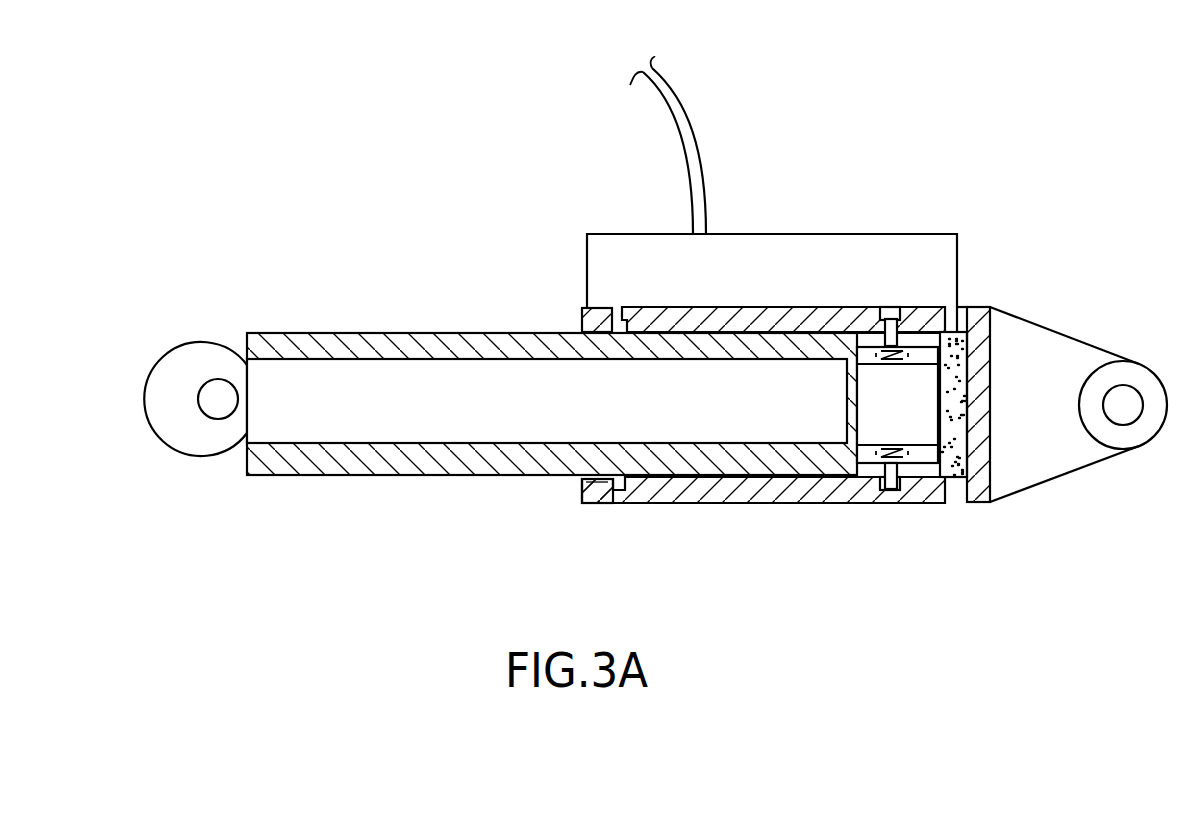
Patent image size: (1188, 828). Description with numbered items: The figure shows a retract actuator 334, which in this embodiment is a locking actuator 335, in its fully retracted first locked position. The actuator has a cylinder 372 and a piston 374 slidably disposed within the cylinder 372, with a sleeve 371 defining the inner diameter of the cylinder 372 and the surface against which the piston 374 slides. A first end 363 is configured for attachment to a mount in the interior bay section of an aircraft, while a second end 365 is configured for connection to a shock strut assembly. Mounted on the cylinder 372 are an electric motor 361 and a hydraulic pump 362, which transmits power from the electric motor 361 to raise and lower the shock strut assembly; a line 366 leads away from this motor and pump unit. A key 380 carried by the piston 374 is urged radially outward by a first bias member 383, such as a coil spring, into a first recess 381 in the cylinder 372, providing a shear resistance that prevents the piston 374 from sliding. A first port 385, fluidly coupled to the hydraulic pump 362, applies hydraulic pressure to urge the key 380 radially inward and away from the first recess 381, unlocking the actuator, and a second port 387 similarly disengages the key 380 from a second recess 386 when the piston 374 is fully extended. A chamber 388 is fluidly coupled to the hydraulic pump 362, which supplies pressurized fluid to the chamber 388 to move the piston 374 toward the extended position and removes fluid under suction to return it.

The retract actuator 334 is at (371, 121).
The locking actuator 335 is at (318, 247).
The electric motor 361 is at (612, 247).
The hydraulic pump 362 is at (948, 248).
The first end 363 is at (1067, 350).
The second end 365 is at (178, 378).
The cable conduit 366 is at (685, 118).
The sleeve 371 is at (772, 481).
The cylinder 372 is at (685, 490).
The piston 374 is at (383, 466).
The key 380 is at (898, 478).
The first recess 381 is at (885, 490).
The first bias member 383 is at (903, 352).
The first port 385 is at (899, 312).
The second recess 386 is at (600, 483).
The second port 387 is at (610, 313).
The chamber 388 is at (953, 413).